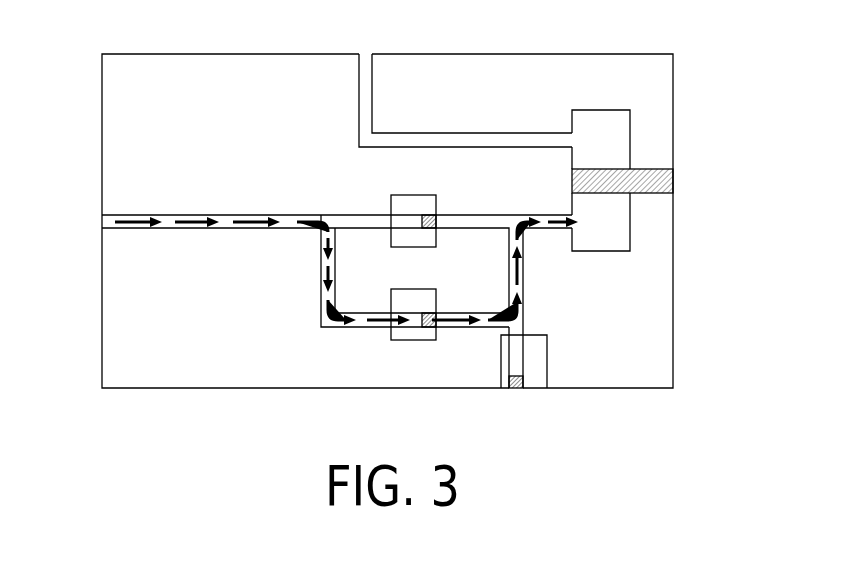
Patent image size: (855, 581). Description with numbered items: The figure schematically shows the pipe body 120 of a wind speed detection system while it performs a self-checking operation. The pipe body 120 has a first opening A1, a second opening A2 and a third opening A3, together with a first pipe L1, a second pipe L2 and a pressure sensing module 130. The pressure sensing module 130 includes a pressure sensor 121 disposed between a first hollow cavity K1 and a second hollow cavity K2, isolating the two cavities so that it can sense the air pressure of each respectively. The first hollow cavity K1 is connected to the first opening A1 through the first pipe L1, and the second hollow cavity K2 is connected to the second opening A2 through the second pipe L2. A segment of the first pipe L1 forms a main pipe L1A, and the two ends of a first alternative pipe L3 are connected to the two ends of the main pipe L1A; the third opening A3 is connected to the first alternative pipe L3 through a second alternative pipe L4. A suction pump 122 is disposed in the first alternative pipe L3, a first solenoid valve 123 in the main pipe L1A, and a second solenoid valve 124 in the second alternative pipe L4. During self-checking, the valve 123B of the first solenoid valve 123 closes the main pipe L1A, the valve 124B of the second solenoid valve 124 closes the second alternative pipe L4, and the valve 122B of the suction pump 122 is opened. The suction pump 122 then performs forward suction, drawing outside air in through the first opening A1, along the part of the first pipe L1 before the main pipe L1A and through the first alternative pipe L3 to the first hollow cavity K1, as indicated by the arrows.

The pipe body 120 is at (673, 95).
The pressure sensor 121 is at (673, 182).
The suction pump 122 is at (400, 341).
The valve of the suction pump 122B is at (443, 311).
The first solenoid valve 123 is at (400, 195).
The valve of the first solenoid valve 123B is at (430, 214).
The second solenoid valve 124 is at (540, 372).
The valve of the second solenoid valve 124B is at (503, 380).
The pressure sensing module 130 is at (723, 125).
The first hollow cavity K1 is at (605, 223).
The second hollow cavity K2 is at (605, 138).
The first pipe L1 is at (232, 213).
The main pipe L1A is at (487, 213).
The second pipe L2 is at (373, 100).
The first alternative pipe L3 is at (321, 300).
The second alternative pipe L4 is at (515, 350).
The first opening A1 is at (93, 227).
The second opening A2 is at (375, 46).
The third opening A3 is at (524, 400).